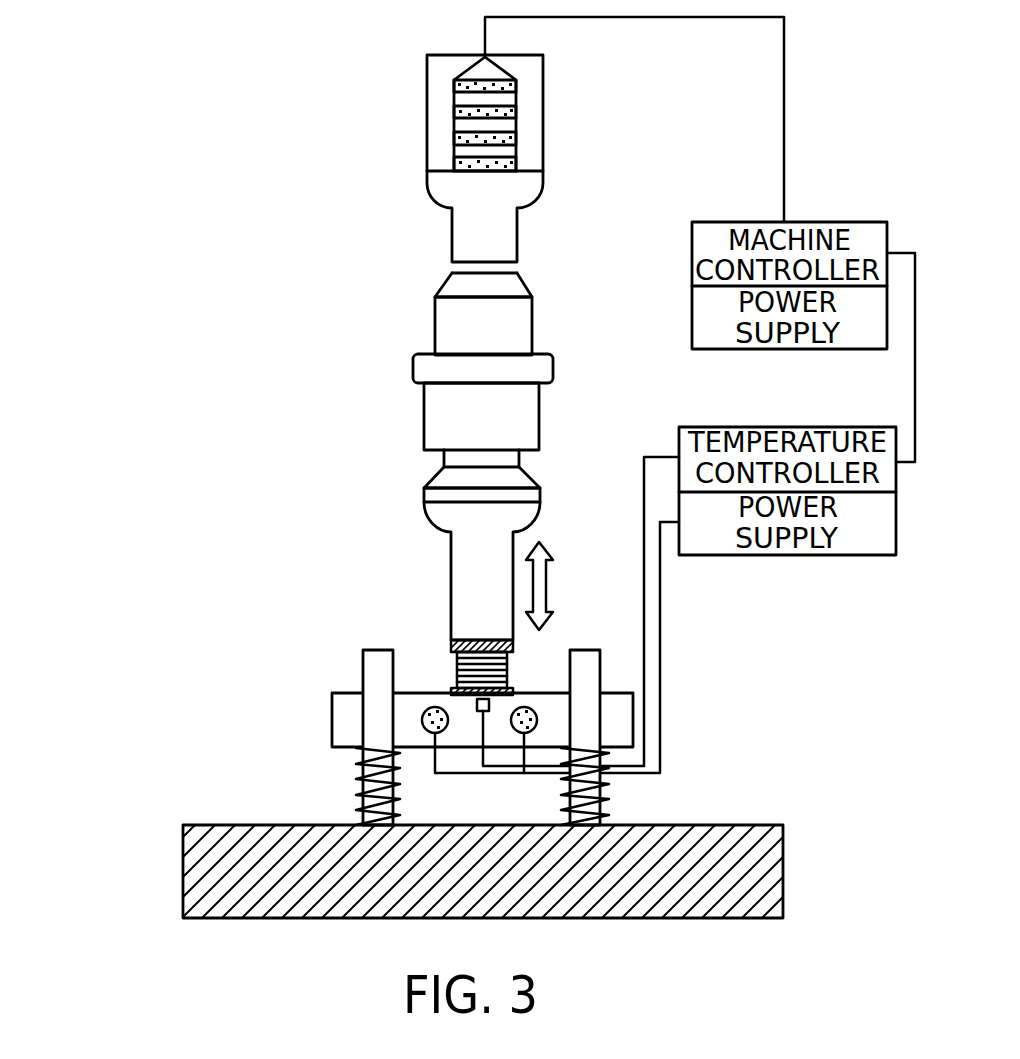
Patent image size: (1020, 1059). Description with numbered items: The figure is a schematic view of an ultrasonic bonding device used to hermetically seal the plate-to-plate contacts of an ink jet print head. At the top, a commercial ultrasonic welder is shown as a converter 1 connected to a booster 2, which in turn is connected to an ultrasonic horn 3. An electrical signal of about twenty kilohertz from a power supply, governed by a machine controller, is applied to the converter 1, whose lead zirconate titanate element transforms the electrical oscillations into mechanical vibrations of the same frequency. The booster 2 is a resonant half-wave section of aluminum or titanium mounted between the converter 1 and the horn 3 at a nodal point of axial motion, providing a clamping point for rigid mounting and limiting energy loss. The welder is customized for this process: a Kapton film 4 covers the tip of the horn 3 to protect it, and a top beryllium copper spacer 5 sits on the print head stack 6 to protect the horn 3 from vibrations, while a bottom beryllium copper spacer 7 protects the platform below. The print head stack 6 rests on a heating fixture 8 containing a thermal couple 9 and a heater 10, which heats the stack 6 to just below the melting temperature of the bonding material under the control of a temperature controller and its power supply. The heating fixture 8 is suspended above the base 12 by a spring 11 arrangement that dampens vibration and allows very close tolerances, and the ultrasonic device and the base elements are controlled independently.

The converter 1 is at (455, 125).
The booster 2 is at (413, 368).
The ultrasonic horn 3 is at (424, 492).
The Kapton film 4 is at (452, 645).
The top beryllium copper spacer 5 is at (456, 654).
The print head stack 6 is at (456, 670).
The bottom beryllium copper spacer 7 is at (456, 690).
The heating fixture 8 is at (414, 693).
The thermal couple 9 is at (477, 705).
The heater 10 is at (422, 720).
The spring 11 is at (358, 778).
The base 12 is at (183, 864).